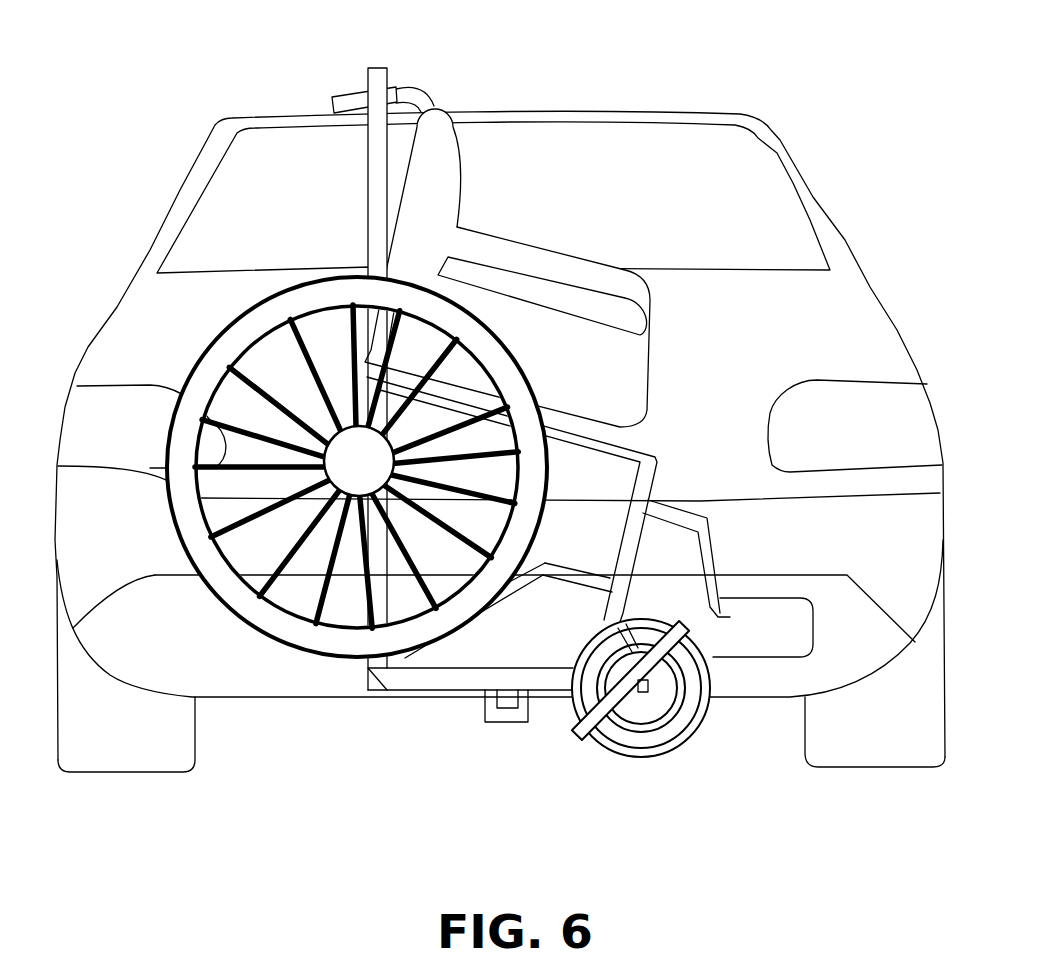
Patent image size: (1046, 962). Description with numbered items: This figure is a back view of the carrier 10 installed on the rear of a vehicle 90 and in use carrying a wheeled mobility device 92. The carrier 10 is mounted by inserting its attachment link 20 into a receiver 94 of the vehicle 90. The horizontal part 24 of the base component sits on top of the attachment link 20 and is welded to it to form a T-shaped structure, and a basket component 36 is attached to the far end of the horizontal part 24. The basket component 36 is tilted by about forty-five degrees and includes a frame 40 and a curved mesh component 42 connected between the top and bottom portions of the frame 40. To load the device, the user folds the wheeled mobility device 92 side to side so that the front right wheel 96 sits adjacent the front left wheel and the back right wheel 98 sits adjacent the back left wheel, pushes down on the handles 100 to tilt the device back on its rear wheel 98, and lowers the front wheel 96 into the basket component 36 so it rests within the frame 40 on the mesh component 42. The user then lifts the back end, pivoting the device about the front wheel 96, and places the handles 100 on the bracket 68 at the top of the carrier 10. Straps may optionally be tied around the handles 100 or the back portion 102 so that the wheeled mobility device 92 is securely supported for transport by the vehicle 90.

The carrier 10 is at (414, 394).
The attachment link 20 is at (454, 721).
The horizontal part 24 is at (395, 683).
The basket component 36 is at (647, 730).
The frame 40 is at (647, 700).
The mesh component 42 is at (707, 723).
The bracket 68 is at (397, 66).
The vehicle 90 is at (660, 96).
The wheeled mobility device 92 is at (667, 335).
The receiver 94 is at (508, 723).
The front right wheel 96 is at (663, 742).
The back right wheel 98 is at (288, 645).
The handles 100 is at (352, 92).
The back portion 102 is at (463, 138).